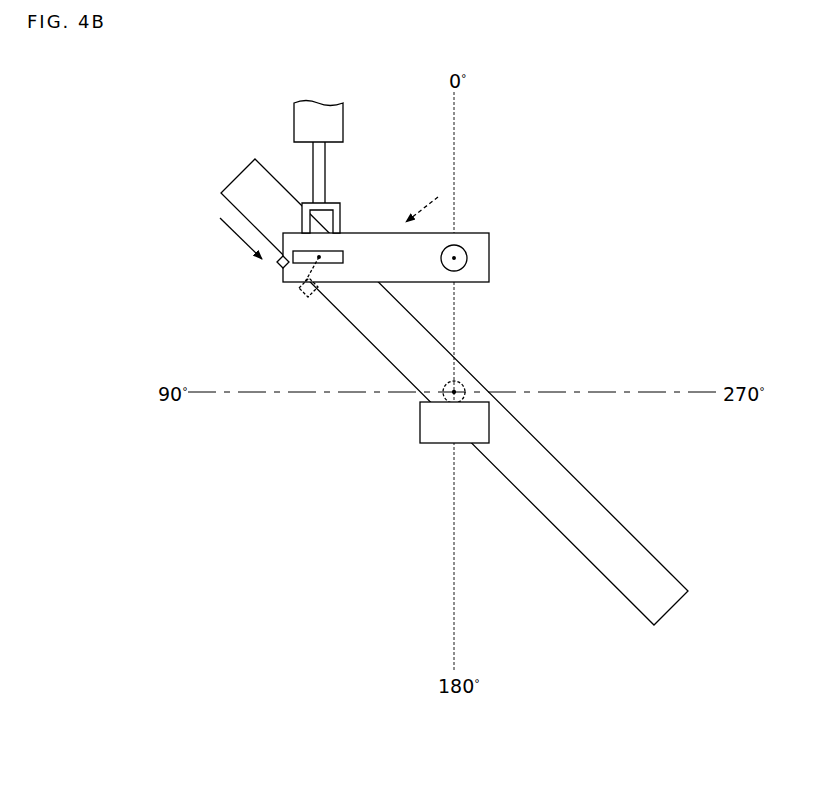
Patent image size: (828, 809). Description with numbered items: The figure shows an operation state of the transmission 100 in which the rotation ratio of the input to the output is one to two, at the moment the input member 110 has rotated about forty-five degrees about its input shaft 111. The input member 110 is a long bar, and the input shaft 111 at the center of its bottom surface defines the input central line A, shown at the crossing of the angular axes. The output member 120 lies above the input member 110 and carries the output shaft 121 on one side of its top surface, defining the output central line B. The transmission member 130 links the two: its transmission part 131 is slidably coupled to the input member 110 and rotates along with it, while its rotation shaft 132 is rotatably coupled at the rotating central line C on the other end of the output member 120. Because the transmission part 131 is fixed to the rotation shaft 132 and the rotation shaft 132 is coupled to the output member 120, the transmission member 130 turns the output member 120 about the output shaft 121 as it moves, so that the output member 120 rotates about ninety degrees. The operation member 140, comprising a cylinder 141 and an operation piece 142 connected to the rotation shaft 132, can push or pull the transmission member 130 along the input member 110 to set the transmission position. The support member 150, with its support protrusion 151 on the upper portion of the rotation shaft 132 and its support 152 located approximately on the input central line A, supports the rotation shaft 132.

The transmission 100 is at (571, 138).
The input member 110 is at (583, 486).
The input shaft 111 is at (470, 390).
The output member 120 is at (438, 242).
The output shaft 121 is at (465, 264).
The transmission member 130 is at (175, 232).
The transmission part 131 is at (310, 210).
The rotation shaft 132 is at (293, 262).
The operation member 140 is at (417, 130).
The cylinder 141 is at (338, 122).
The operation piece 142 is at (340, 217).
The support member 150 is at (410, 520).
The support protrusion 151 is at (319, 257).
The support 152 is at (434, 444).
The input central line A is at (445, 397).
The output central line B is at (465, 252).
The rotating central line C is at (300, 298).